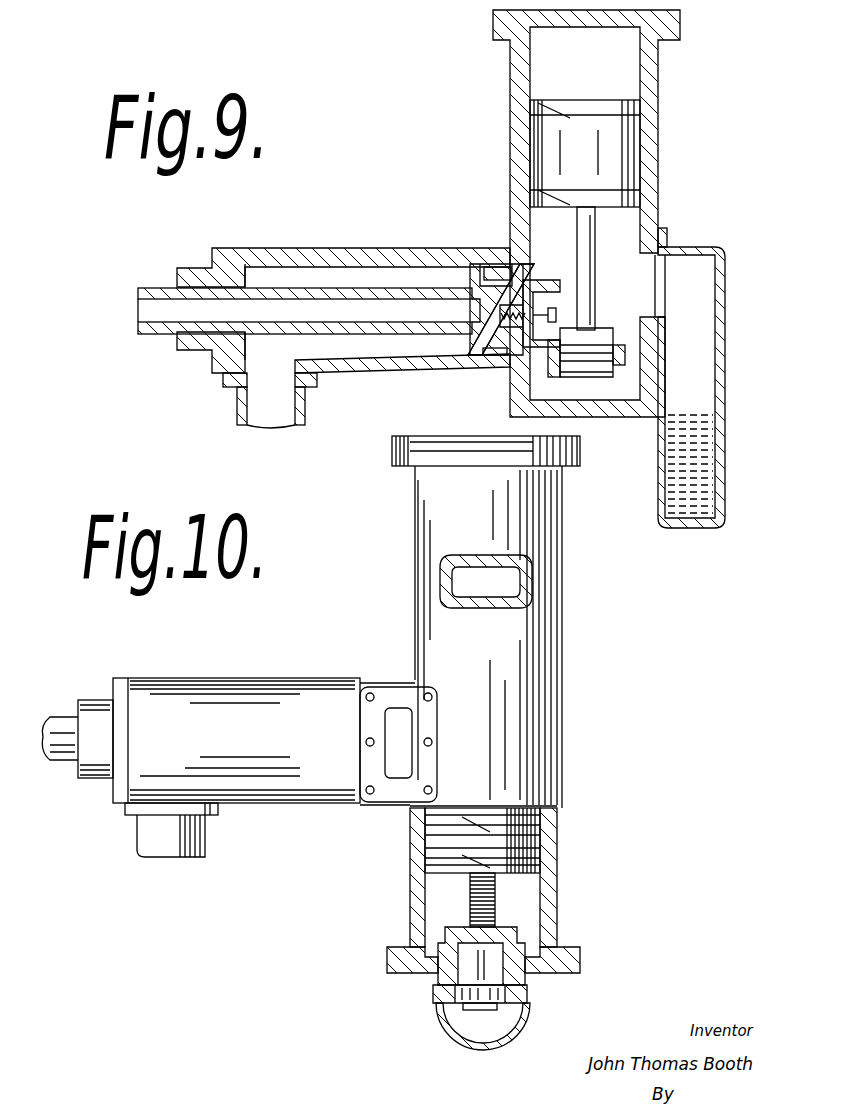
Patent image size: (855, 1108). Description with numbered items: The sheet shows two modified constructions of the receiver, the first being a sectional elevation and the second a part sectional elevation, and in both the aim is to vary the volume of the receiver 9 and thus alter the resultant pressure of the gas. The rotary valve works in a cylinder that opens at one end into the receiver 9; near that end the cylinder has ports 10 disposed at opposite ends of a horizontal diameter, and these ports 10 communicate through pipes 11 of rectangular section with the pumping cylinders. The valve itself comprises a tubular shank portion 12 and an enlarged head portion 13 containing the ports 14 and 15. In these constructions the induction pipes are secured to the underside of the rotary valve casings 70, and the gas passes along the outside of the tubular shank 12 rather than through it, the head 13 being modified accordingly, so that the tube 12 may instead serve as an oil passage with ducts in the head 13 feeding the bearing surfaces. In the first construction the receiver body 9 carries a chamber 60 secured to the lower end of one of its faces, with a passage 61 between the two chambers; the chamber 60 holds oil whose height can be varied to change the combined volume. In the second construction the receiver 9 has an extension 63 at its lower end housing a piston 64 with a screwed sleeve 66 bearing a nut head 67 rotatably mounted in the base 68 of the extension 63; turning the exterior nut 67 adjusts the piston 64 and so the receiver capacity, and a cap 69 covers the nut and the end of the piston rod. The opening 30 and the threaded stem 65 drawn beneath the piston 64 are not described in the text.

In FIG. 9, the receiver 9 is at (623, 232).
In FIG. 10, the ports 10 is at (395, 758).
In FIG. 9, the pipes 11 is at (237, 403).
In FIG. 10, the pipes 11 is at (170, 832).
In FIG. 9, the tubular shank portion 12 is at (363, 337).
In FIG. 9, the enlarged head portion 13 is at (455, 353).
In FIG. 9, the port 14 is at (493, 273).
In FIG. 9, the port 15 is at (500, 372).
In FIG. 10, the window opening 30 is at (513, 583).
In FIG. 9, the chamber 60 is at (677, 465).
In FIG. 9, the passage 61 is at (643, 275).
In FIG. 10, the extension 63 is at (520, 912).
In FIG. 10, the piston 64 is at (443, 833).
In FIG. 10, the threaded stem 65 is at (465, 915).
In FIG. 10, the screwed sleeve 66 is at (525, 955).
In FIG. 10, the nut head 67 is at (530, 993).
In FIG. 10, the base 68 is at (440, 963).
In FIG. 10, the cap 69 is at (460, 1018).
In FIG. 9, the rotary valve casing 70 is at (334, 256).
In FIG. 10, the rotary valve casing 70 is at (300, 710).